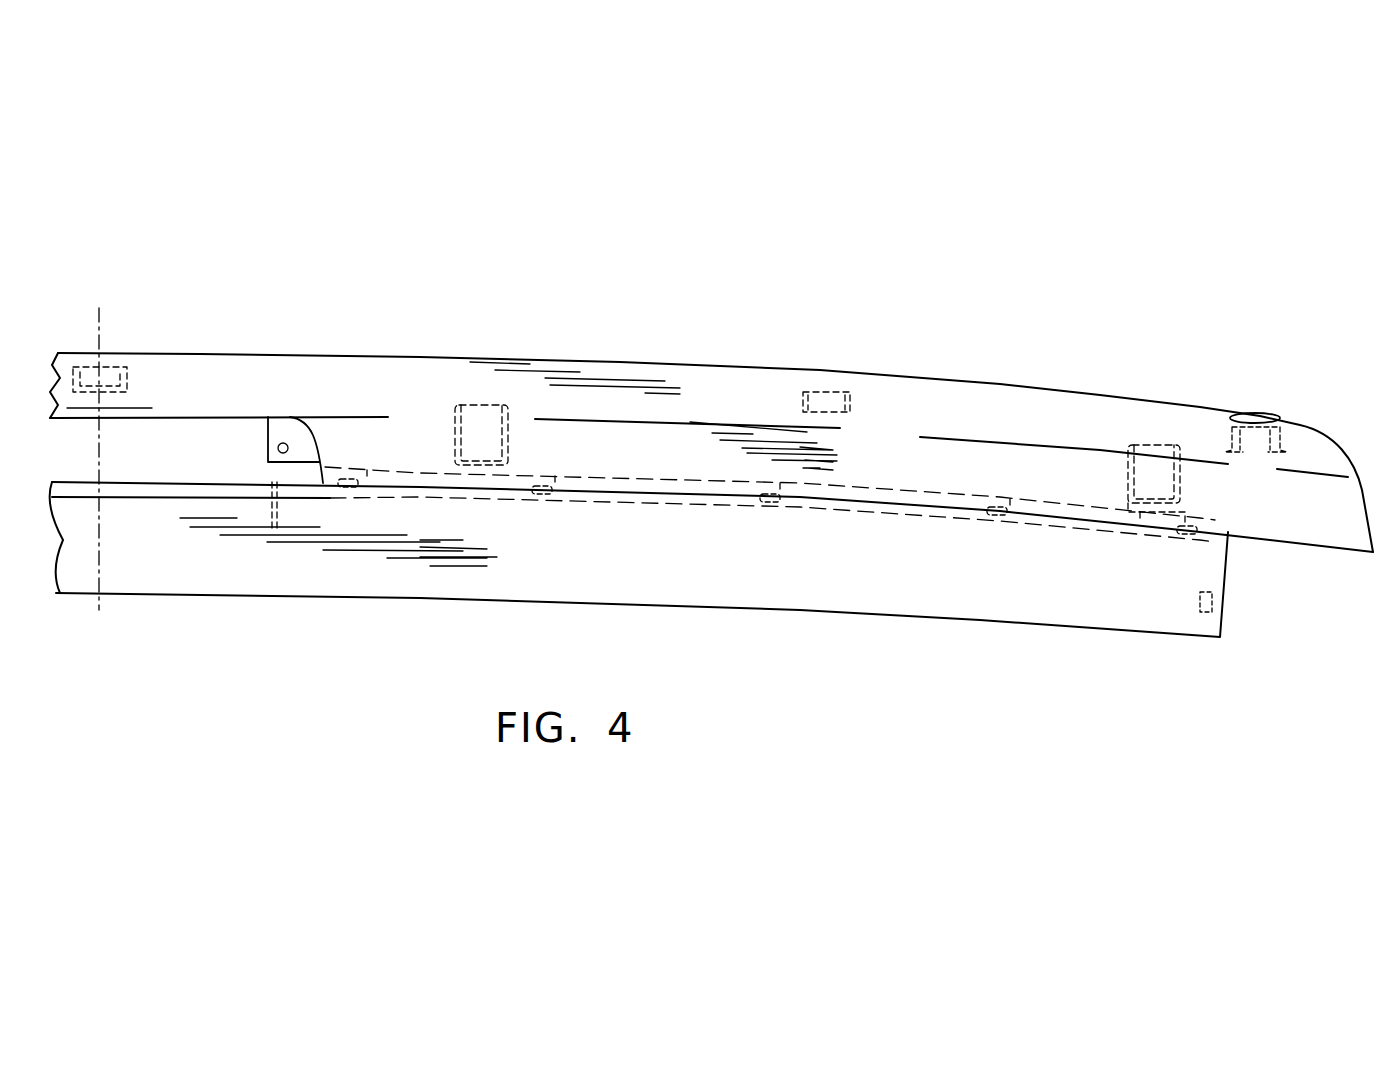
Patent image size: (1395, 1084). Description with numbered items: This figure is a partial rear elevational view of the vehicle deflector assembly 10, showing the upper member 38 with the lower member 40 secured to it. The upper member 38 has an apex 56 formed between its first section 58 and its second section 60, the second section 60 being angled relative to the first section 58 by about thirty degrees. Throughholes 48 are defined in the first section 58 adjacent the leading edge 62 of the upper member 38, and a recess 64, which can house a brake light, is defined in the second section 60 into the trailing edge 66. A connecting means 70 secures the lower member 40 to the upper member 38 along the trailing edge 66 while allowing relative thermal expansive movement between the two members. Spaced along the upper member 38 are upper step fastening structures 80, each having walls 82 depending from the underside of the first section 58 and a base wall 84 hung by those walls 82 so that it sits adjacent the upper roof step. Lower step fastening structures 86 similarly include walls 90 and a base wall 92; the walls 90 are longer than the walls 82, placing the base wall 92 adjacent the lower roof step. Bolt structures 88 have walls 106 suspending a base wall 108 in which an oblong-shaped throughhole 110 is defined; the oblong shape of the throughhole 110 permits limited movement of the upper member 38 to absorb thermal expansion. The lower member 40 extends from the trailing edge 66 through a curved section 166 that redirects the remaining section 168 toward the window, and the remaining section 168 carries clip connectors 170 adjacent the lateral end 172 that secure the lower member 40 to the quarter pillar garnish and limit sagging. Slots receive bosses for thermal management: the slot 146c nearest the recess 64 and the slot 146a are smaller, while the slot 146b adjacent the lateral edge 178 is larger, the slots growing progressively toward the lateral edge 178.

The deflector assembly 10 is at (715, 304).
The upper member 38 is at (744, 368).
The lower member 40 is at (744, 610).
The throughholes 48 is at (1260, 417).
The apex 56 is at (948, 438).
The first section 58 is at (915, 395).
The second section 60 is at (620, 440).
The leading edge 62 is at (1038, 387).
The recess 64 is at (187, 440).
The trailing edge 66 is at (1273, 543).
The connecting means 70 is at (1013, 490).
The upper step fastening structures 80 is at (137, 385).
The walls 82 is at (803, 398).
The base wall 84 is at (840, 415).
The lower step fastening structures 86 is at (442, 437).
The bolt structures 88 is at (1300, 445).
The walls 90 is at (1130, 473).
The base wall 92 is at (1135, 515).
The walls 106 is at (1227, 448).
The base wall 108 is at (1278, 463).
The oblong-shaped throughhole 110 is at (1255, 443).
The slot 146a is at (540, 494).
The slot 146b is at (1185, 540).
The slot 146c is at (345, 470).
The curved section 166 is at (840, 515).
The remaining section 168 is at (297, 583).
The clip connectors 170 is at (1233, 613).
The lateral end 172 is at (1228, 580).
The lateral edge 178 is at (1363, 493).